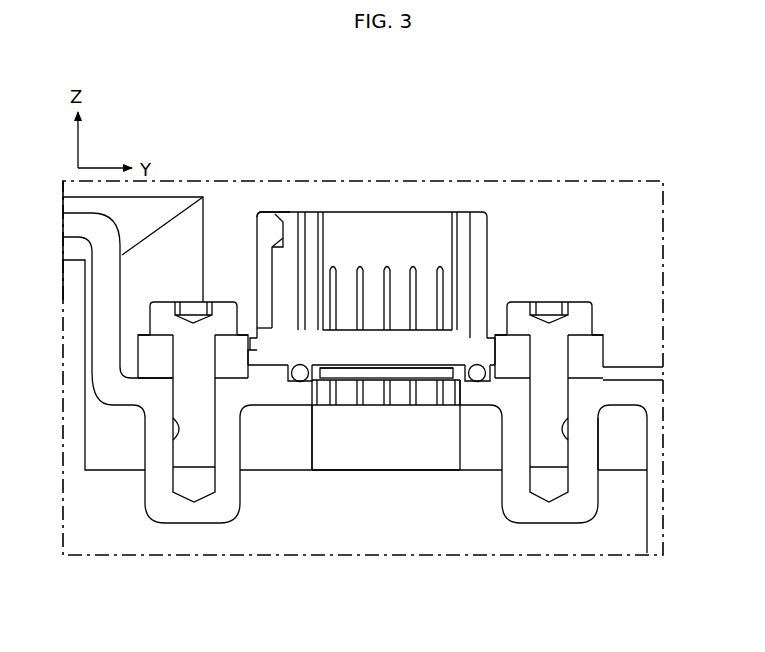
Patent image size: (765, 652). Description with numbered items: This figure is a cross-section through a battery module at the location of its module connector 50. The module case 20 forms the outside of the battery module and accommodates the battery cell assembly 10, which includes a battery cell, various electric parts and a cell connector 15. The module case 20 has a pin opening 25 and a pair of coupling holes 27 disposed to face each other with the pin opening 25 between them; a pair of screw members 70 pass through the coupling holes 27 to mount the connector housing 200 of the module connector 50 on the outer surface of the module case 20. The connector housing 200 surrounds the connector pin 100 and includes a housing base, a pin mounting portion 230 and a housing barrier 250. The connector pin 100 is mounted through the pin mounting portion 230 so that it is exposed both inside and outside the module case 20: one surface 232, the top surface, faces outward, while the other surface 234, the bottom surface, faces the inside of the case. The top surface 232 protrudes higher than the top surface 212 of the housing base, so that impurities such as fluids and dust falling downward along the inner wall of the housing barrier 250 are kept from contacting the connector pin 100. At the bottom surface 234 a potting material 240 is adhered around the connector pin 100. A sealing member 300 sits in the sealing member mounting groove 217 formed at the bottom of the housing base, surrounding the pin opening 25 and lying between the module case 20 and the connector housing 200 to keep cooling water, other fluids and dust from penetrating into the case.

The battery cell assembly 10 is at (625, 491).
The cell connector 15 is at (424, 462).
The module case 20 is at (118, 382).
The pin opening 25 is at (470, 392).
The coupling hole 27 is at (173, 428).
The module connector 50 is at (268, 200).
The screw member 70 is at (160, 302).
The connector pin 100 is at (358, 262).
The connector housing 200 is at (492, 252).
The top surface of the housing base 212 is at (468, 337).
The sealing member mounting groove 217 is at (296, 378).
The pin mounting portion 230 is at (318, 343).
The top surface of the pin mounting portion 232 is at (423, 336).
The bottom surface of the pin mounting portion 234 is at (318, 472).
The potting material 240 is at (375, 372).
The housing barrier 250 is at (487, 225).
The sealing member 300 is at (318, 379).